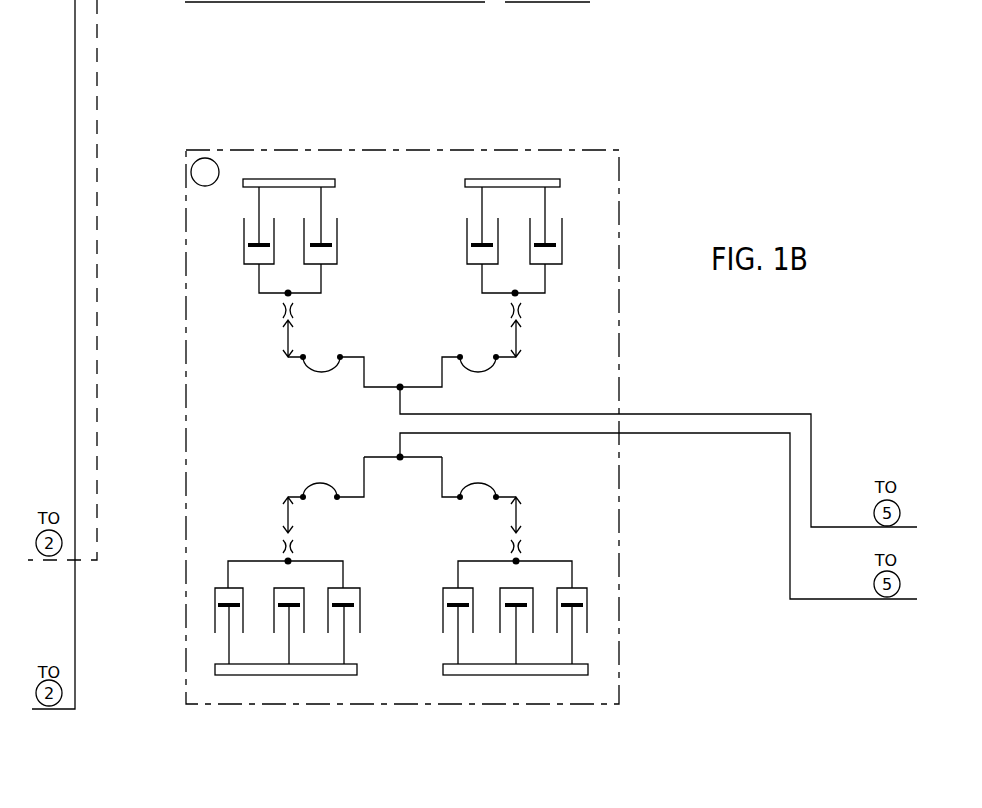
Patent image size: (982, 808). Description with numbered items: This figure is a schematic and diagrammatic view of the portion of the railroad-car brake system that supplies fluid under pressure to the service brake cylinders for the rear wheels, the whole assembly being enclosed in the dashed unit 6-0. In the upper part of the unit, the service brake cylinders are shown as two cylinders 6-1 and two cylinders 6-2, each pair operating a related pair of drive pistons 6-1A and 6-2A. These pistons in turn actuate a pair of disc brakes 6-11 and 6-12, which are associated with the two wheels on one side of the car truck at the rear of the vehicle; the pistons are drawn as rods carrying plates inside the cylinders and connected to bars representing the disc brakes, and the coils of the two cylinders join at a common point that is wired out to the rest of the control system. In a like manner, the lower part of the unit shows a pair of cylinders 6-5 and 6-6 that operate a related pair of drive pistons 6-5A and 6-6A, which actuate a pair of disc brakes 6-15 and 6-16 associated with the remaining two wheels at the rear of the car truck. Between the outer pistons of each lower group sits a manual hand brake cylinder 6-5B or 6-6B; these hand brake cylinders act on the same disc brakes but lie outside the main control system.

The relay assembly unit 6 6-0 is at (228, 142).
The service brake cylinders 6-1 is at (243, 243).
The drive pistons 6-1A is at (318, 205).
The disc brake 6-11 is at (317, 178).
The disc brake 6-12 is at (500, 178).
The drive pistons 6-2A is at (545, 206).
The service brake cylinders 6-2 is at (467, 248).
The cylinder 6-5 is at (215, 614).
The drive pistons 6-5A is at (342, 642).
The manual hand brake cylinder 6-5B is at (273, 614).
The disc brake 6-15 is at (303, 676).
The disc brake 6-16 is at (488, 676).
The drive pistons 6-6A is at (460, 642).
The manual hand brake cylinder 6-6B is at (533, 606).
The cylinder 6-6 is at (450, 587).